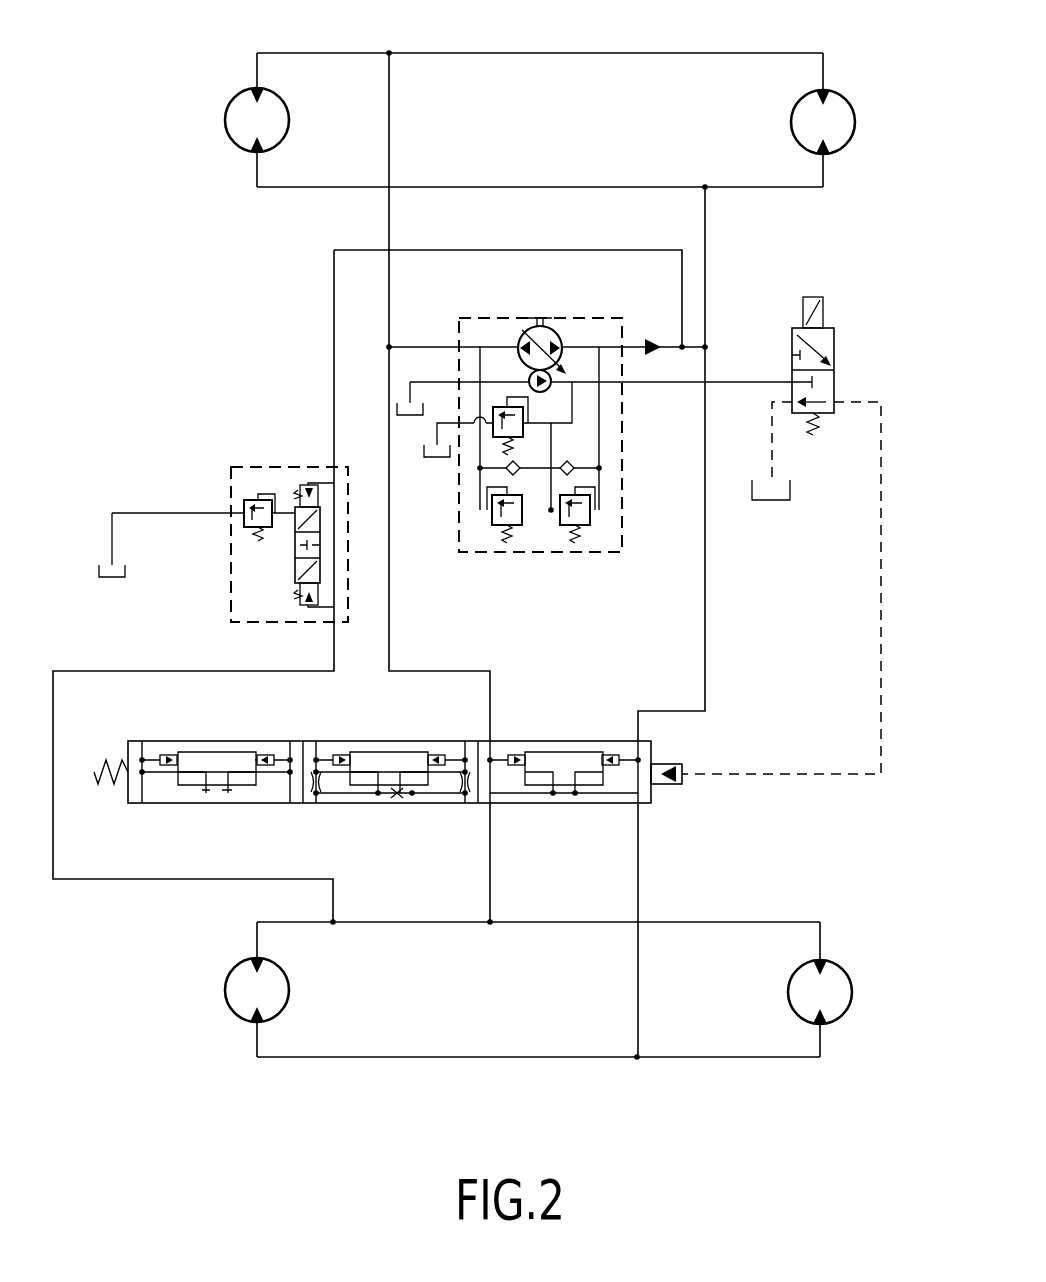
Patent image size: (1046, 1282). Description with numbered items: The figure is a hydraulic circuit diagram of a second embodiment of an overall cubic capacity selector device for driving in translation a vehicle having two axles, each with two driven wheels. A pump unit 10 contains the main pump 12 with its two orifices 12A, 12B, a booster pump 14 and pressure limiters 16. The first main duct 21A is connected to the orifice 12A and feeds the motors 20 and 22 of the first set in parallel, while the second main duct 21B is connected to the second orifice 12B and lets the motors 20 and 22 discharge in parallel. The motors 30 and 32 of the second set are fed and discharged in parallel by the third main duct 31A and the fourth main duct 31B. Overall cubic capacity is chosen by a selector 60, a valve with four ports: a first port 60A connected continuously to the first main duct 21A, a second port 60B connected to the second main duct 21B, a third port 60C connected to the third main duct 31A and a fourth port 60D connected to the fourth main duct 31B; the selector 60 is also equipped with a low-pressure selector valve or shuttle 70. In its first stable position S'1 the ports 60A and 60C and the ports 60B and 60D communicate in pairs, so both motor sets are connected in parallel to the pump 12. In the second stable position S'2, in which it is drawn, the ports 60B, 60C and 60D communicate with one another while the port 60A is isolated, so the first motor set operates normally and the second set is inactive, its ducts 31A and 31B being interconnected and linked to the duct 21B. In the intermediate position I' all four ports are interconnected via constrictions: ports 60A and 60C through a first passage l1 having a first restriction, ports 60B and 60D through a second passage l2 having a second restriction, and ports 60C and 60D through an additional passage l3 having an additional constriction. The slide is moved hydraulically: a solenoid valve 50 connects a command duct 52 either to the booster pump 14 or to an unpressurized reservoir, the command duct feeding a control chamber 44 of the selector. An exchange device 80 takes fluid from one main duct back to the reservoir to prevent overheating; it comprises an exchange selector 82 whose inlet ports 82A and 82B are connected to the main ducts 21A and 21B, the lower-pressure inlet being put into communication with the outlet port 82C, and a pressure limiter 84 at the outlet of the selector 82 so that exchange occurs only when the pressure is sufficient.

The pump unit 10 is at (470, 562).
The main pump 12 is at (548, 318).
The first orifice of the main pump 12A is at (563, 337).
The second orifice of the main pump 12B is at (520, 337).
The booster pump 14 is at (553, 392).
The pressure limiters 16 is at (590, 538).
The motor of the first set 20 is at (838, 95).
The first main duct 21A is at (540, 185).
The second main duct 21B is at (540, 52).
The motor of the first set 22 is at (245, 92).
The motor of the second set 30 is at (833, 964).
The third main duct 31A is at (537, 1055).
The fourth main duct 31B is at (537, 920).
The motor of the second set 32 is at (244, 962).
The control chamber 44 is at (668, 786).
The solenoid valve 50 is at (841, 322).
The command duct 52 is at (885, 585).
The selector 60 is at (408, 746).
The first port 60A is at (651, 744).
The second port 60B is at (490, 741).
The third port 60C is at (651, 803).
The fourth port 60D is at (492, 803).
The low-pressure selector valve or shuttle 70 is at (557, 752).
The exchange device 80 is at (224, 458).
The exchange selector 82 is at (283, 528).
The inlet port of the exchange selector 82A is at (324, 515).
The inlet port of the exchange selector 82B is at (322, 535).
The outlet port of the exchange selector 82C is at (289, 500).
The pressure limiter 84 is at (242, 520).
The first stable position S'1 is at (216, 800).
The second stable position S'2 is at (600, 826).
The intermediate position I' is at (390, 802).
The first passage l1 is at (464, 746).
The second passage l2 is at (318, 746).
The additional passage l3 is at (442, 803).